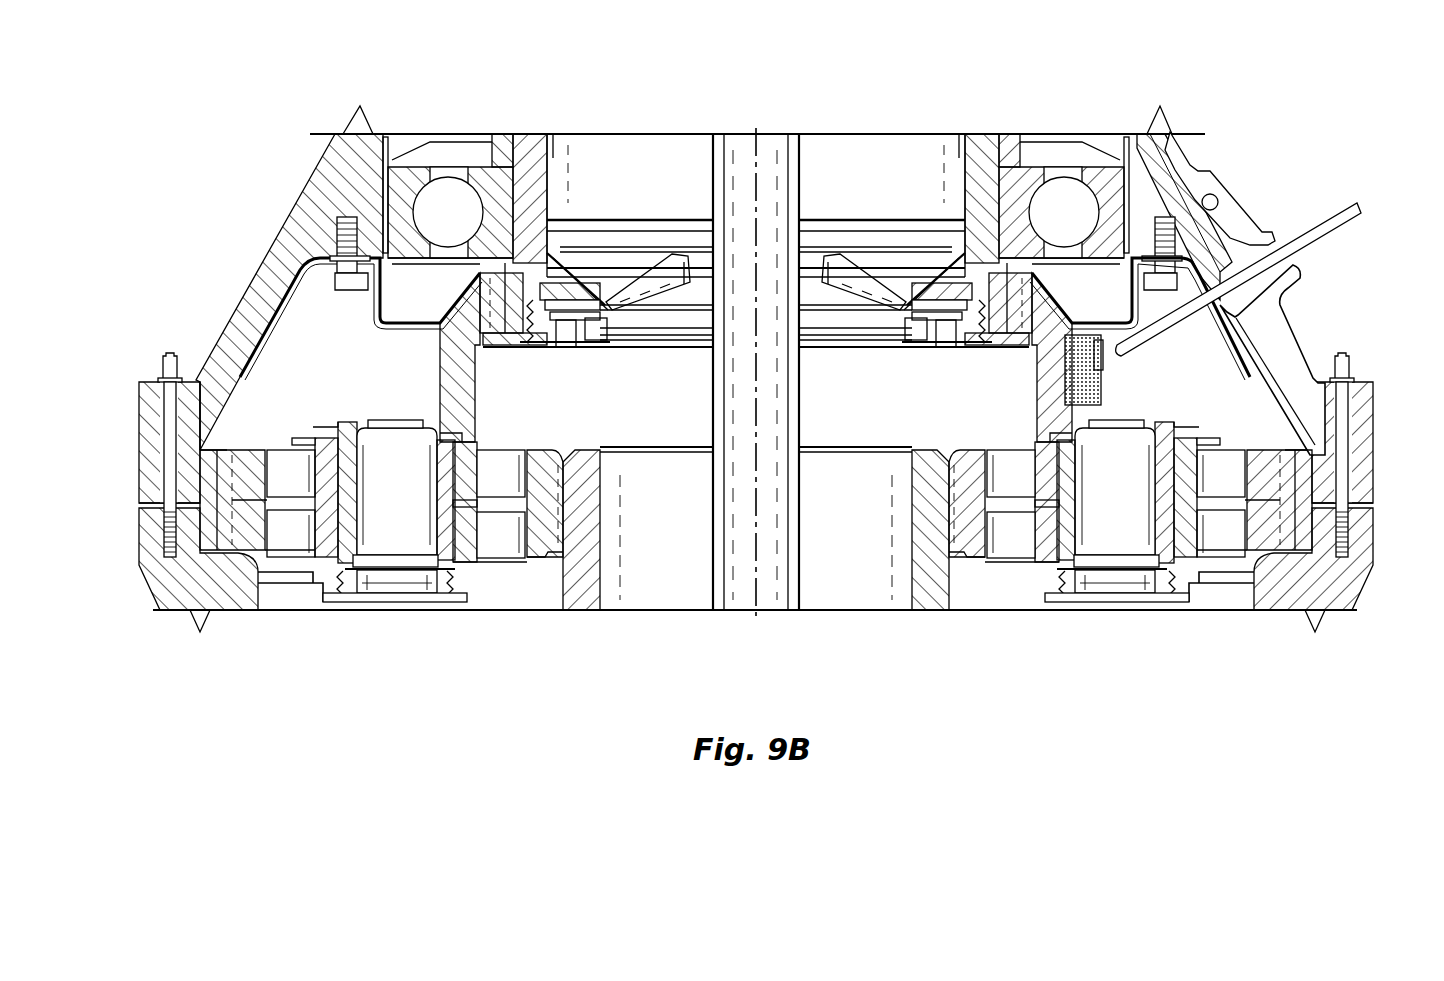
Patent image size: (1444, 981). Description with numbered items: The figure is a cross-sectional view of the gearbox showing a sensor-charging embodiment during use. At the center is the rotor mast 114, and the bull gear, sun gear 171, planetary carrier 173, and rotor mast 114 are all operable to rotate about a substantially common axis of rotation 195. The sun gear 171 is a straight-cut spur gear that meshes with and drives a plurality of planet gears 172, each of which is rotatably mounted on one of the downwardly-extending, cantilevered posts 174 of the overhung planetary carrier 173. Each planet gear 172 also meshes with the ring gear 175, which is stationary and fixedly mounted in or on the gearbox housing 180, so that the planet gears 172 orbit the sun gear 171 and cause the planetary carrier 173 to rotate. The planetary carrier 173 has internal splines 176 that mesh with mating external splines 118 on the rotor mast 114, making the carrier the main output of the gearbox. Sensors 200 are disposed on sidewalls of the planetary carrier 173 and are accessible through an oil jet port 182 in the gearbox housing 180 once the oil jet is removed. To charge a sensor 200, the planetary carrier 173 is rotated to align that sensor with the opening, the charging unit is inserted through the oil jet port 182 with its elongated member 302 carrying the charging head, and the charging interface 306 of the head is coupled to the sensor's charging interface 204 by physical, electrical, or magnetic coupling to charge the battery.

The rotor mast 114 is at (559, 150).
The axis of rotation 195 is at (769, 150).
The external splines 118 is at (498, 262).
The charging interface 204 is at (1122, 336).
The elongated member 302 is at (1290, 237).
The oil jet port 182 is at (1305, 257).
The charging interface 306 is at (1138, 340).
The sensors 200 is at (1107, 403).
The internal splines 176 is at (517, 342).
The planetary carrier 173 is at (480, 421).
The planet gears 172 is at (252, 463).
The posts 174 is at (353, 530).
The sun gear 171 is at (918, 585).
The ring gear 175 is at (208, 455).
The gearbox housing 180 is at (150, 436).